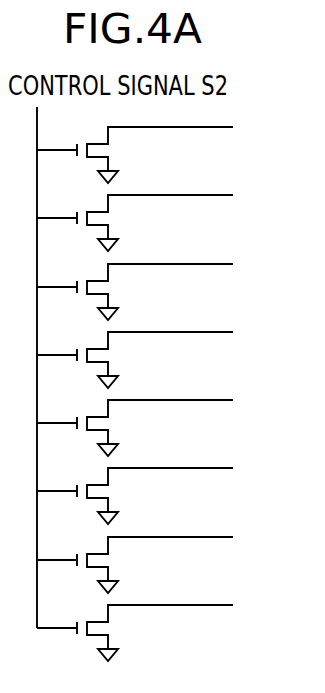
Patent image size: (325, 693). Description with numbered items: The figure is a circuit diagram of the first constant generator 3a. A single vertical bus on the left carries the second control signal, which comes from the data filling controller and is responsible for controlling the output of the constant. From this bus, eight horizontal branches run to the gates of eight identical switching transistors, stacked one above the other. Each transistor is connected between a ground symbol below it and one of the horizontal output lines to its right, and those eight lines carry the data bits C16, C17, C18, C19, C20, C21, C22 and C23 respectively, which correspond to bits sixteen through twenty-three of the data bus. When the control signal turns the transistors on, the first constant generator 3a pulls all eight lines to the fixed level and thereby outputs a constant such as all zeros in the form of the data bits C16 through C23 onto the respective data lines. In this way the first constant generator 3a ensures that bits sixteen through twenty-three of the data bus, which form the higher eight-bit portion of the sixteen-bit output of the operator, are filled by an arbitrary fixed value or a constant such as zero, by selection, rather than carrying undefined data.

The first constant generator 3a is at (166, 631).
The data bit C16 is at (161, 150).
The data bit C17 is at (161, 218).
The data bit C18 is at (161, 287).
The data bit C19 is at (161, 355).
The data bit C20 is at (161, 423).
The data bit C21 is at (161, 491).
The data bit C22 is at (161, 560).
The data bit C23 is at (161, 628).